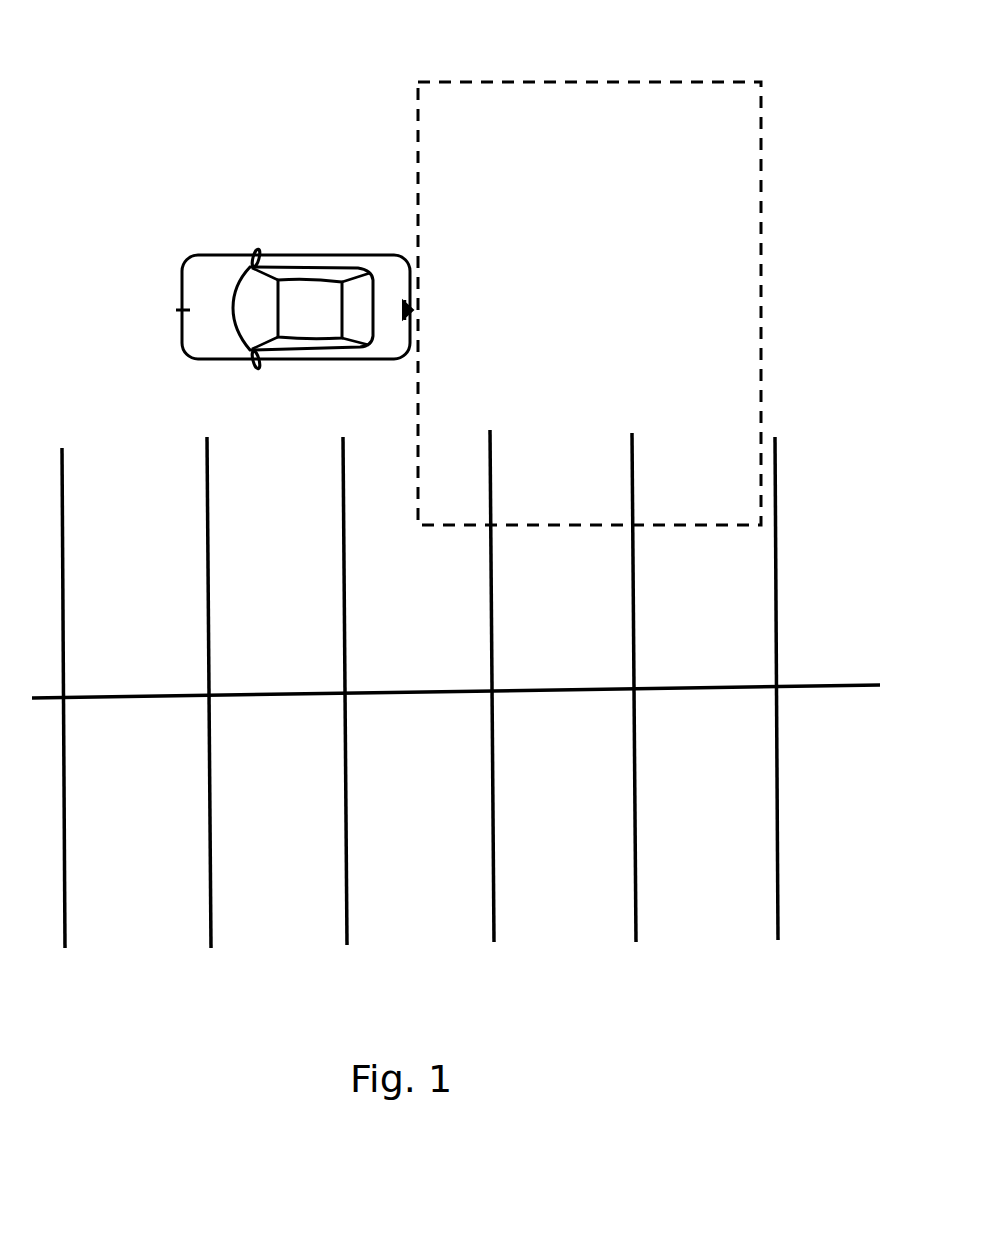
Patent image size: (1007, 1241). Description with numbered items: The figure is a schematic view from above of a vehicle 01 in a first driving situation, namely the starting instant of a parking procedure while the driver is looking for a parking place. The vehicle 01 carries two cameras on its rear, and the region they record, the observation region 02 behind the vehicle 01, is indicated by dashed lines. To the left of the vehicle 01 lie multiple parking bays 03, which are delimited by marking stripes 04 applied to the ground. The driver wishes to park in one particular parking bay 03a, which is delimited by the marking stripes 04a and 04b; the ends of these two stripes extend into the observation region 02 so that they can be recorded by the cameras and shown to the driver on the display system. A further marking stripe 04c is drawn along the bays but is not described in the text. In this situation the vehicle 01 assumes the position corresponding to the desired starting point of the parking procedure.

The vehicle 01 is at (208, 277).
The observation region 02 is at (643, 82).
The parking bays 03 is at (287, 661).
The parking bay 03a is at (594, 498).
The marking stripes 04 is at (209, 553).
The marking stripe 04a is at (492, 583).
The marking stripe 04b is at (633, 632).
The rear boundary line of parking space 04c is at (567, 692).